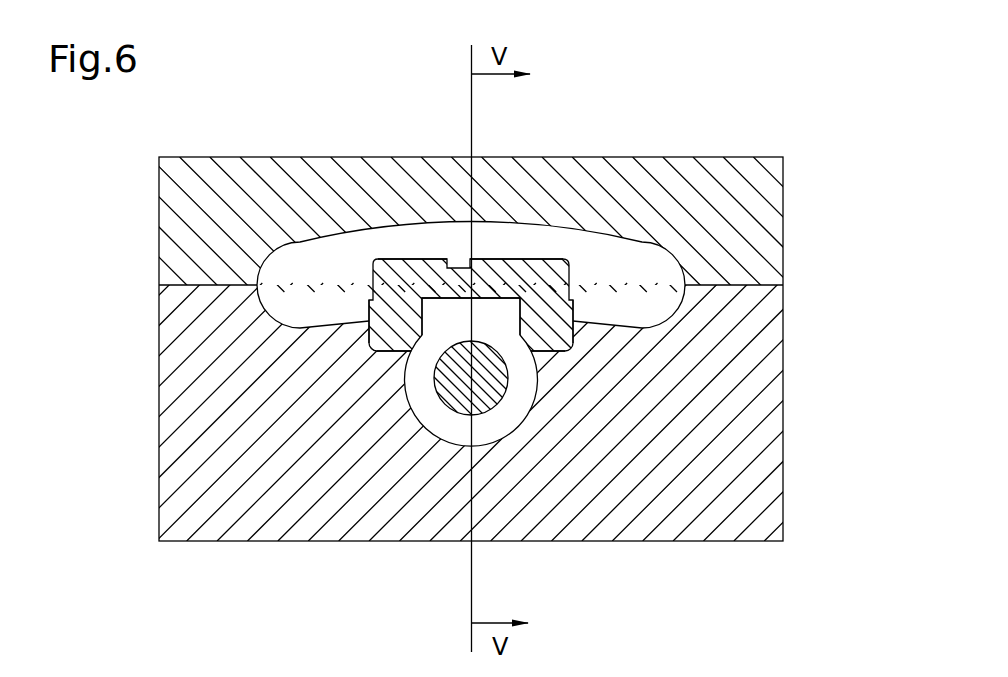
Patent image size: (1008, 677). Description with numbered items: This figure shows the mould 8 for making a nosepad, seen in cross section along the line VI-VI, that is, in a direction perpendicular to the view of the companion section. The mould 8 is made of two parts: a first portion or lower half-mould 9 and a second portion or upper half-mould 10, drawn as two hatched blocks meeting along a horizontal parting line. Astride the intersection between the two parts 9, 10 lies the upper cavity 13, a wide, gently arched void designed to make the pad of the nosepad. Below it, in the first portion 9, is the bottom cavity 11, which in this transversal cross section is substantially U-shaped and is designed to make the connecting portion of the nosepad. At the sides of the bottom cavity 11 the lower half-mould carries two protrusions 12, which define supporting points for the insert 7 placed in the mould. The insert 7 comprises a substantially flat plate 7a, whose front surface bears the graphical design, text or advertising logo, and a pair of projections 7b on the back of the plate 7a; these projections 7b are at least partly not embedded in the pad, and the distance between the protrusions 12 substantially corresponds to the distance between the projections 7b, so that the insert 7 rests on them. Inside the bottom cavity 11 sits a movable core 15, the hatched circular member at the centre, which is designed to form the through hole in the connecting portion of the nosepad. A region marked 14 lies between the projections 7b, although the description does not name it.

The insert 7 is at (415, 247).
The plate 7a is at (371, 266).
The projections 7b is at (427, 405).
The mould 8 is at (698, 155).
The first portion 9 is at (718, 502).
The second portion 10 is at (757, 212).
The bottom cavity 11 is at (402, 353).
The protrusions 12 is at (372, 333).
The upper cavity 13 is at (641, 286).
The slot 14 is at (465, 328).
The movable core 15 is at (458, 390).